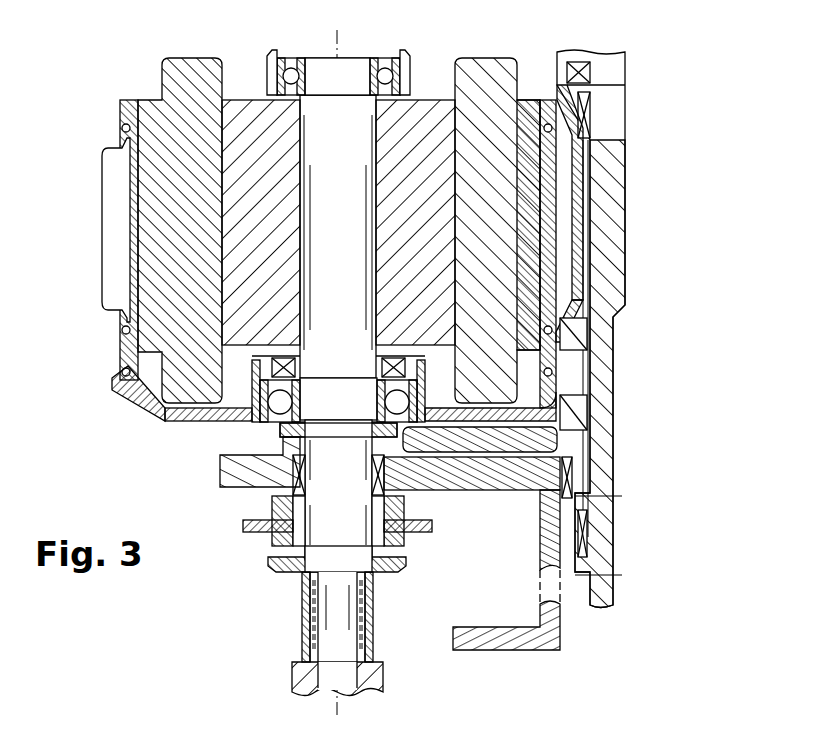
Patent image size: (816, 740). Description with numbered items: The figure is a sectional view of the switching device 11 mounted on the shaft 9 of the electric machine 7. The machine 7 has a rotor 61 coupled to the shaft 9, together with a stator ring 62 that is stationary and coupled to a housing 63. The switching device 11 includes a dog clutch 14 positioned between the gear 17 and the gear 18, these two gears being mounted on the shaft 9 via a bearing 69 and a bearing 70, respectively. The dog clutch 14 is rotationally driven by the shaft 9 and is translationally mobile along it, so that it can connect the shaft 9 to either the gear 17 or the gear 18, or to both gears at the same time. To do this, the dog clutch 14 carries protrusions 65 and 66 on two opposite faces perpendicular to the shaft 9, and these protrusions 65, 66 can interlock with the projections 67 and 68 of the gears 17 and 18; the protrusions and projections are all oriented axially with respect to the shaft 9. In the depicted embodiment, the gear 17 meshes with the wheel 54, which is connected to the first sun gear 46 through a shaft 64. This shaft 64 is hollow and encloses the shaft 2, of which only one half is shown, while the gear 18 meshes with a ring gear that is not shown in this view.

The shaft 2 is at (620, 217).
The electric machine 7 is at (333, 155).
The shaft 9 is at (322, 104).
The switching device 11 is at (428, 544).
The dog clutch 14 is at (428, 524).
The gear 17 is at (232, 470).
The gear 18 is at (302, 628).
The first sun gear 46 is at (516, 645).
The wheel 54 is at (523, 478).
The rotor 61 is at (433, 106).
The stator ring 62 is at (192, 62).
The housing 63 is at (128, 392).
The shaft 64 is at (540, 556).
The protrusion 65 is at (278, 518).
The protrusion 66 is at (275, 538).
The projection 67 is at (400, 502).
The projection 68 is at (406, 548).
The bearing 69 is at (292, 450).
The bearing 70 is at (306, 582).